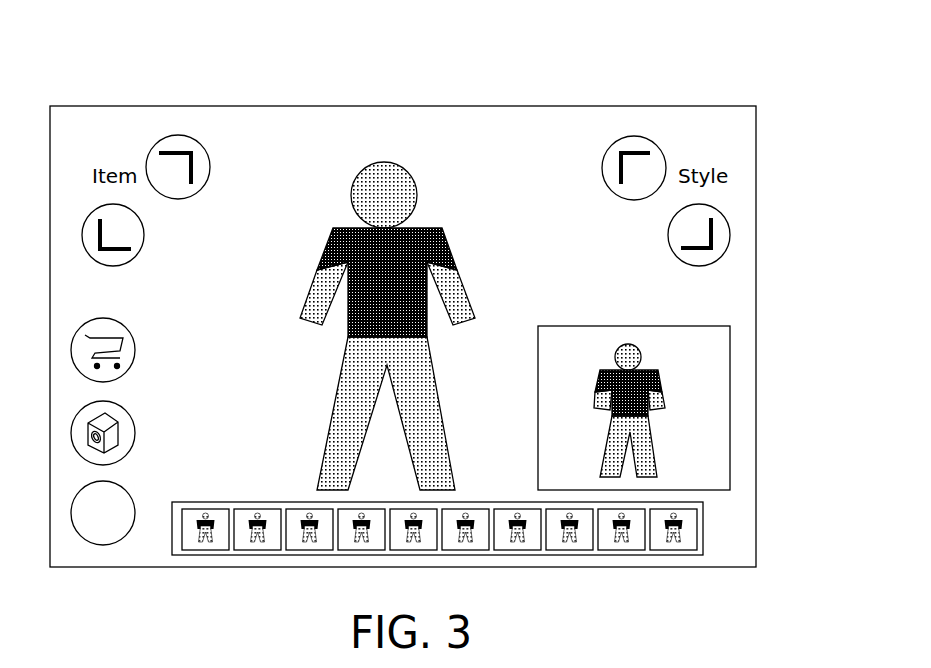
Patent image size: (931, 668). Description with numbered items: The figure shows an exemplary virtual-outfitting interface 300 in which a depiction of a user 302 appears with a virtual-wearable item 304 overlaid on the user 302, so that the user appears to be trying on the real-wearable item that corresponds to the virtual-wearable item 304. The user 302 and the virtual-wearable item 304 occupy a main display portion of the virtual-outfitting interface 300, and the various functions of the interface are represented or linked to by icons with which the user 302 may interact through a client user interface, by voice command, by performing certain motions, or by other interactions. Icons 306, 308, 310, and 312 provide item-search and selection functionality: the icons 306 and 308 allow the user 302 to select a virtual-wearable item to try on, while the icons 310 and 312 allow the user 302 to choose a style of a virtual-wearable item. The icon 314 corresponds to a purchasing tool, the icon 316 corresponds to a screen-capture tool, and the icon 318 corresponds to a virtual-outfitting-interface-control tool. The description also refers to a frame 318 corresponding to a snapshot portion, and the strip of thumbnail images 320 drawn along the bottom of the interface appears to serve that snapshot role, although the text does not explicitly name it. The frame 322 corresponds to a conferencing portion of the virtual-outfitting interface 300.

The virtual-outfitting interface 300 is at (702, 72).
The user 302 is at (418, 194).
The virtual-wearable item 304 is at (449, 250).
The icon 306 is at (211, 168).
The icon 308 is at (143, 248).
The icon 310 is at (602, 166).
The icon 312 is at (675, 258).
The icon 314 is at (136, 340).
The icon 316 is at (136, 424).
The icon 318 is at (136, 503).
The thumbnail strip 320 is at (245, 501).
The frame 322 is at (537, 408).